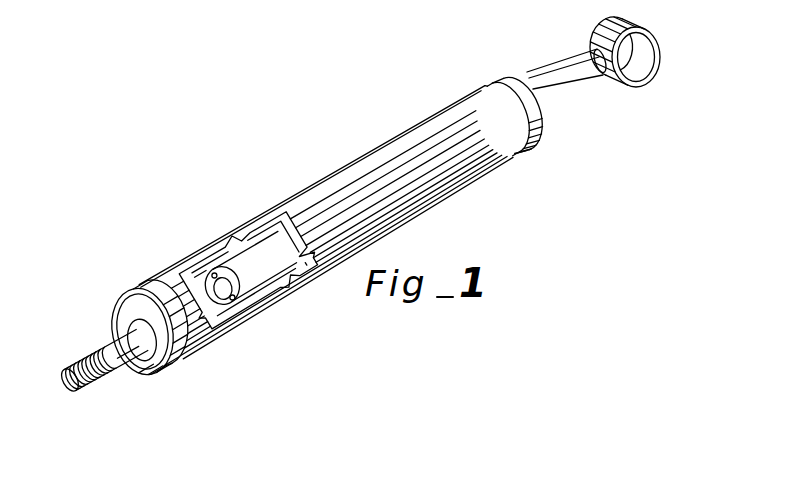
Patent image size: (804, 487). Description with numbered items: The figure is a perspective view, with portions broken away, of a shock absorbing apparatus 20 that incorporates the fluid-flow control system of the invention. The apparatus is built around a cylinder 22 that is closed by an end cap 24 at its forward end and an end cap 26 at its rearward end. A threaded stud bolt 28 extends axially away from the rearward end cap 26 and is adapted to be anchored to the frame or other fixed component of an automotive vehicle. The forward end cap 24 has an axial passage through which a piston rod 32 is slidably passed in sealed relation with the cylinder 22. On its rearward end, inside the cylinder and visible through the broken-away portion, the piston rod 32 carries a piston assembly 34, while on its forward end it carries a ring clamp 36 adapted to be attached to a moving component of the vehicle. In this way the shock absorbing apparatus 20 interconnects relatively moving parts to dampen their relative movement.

The shock absorbing apparatus 20 is at (368, 208).
The cylinder 22 is at (415, 130).
The end cap 24 is at (549, 114).
The end cap 26 is at (162, 362).
The threaded stud bolt 28 is at (86, 352).
The piston rod 32 is at (554, 72).
The piston assembly 34 is at (251, 283).
The ring clamp 36 is at (645, 26).